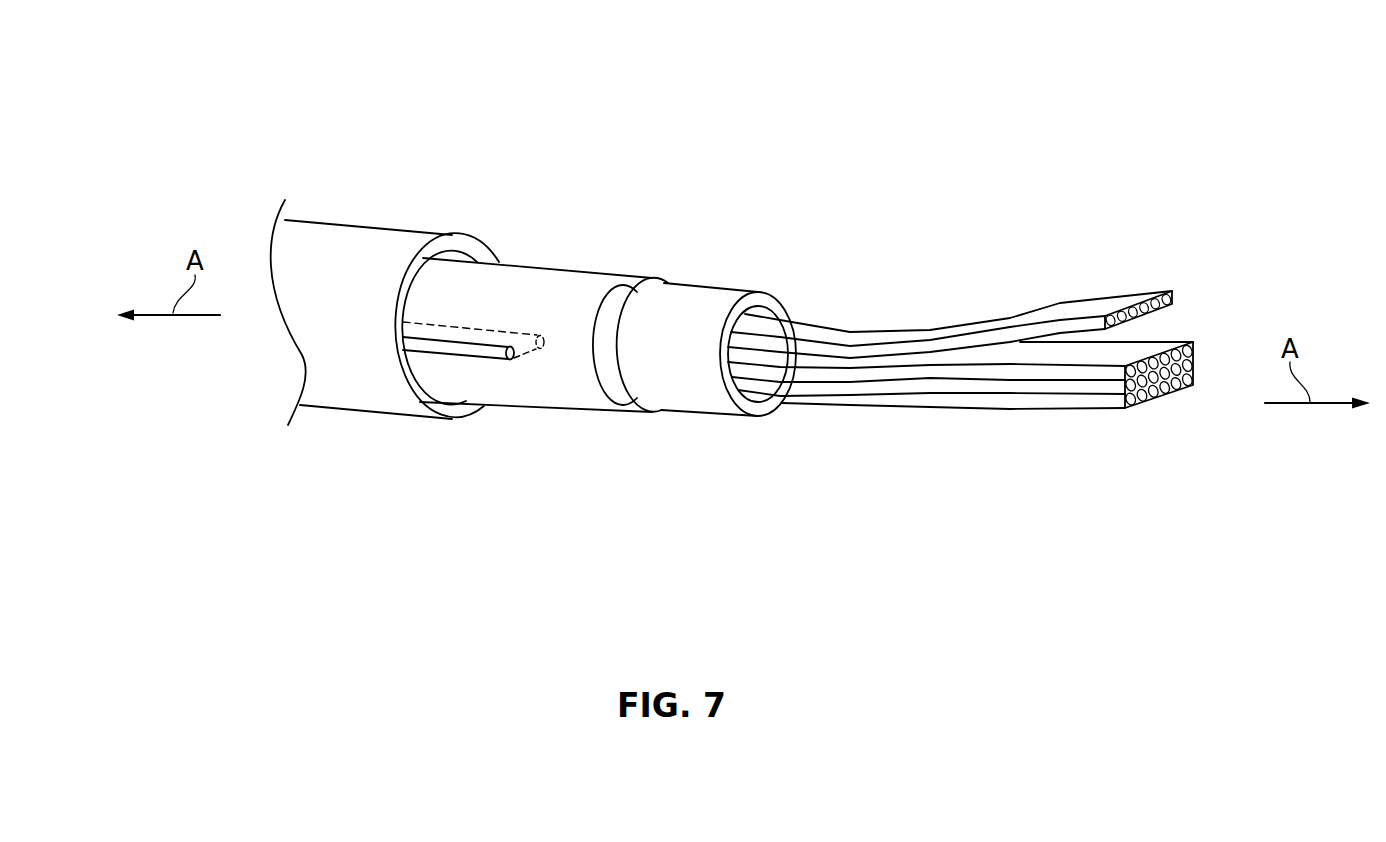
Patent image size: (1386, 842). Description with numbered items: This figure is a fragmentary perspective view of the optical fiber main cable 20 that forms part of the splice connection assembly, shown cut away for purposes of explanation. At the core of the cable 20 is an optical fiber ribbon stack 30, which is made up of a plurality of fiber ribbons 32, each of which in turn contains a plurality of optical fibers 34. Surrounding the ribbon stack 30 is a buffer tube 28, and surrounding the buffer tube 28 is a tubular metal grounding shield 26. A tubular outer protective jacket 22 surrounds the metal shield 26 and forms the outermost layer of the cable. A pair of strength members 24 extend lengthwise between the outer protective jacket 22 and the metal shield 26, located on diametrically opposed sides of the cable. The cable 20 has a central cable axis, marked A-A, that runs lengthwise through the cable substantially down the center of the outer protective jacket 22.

The optical fiber main cable 20 is at (418, 64).
The outer protective jacket 22 is at (347, 240).
The strength members 24 is at (450, 340).
The metal grounding shield 26 is at (612, 285).
The buffer tube 28 is at (703, 298).
The optical fiber ribbon stack 30 is at (850, 428).
The fiber ribbons 32 is at (1062, 307).
The optical fibers 34 is at (1140, 300).